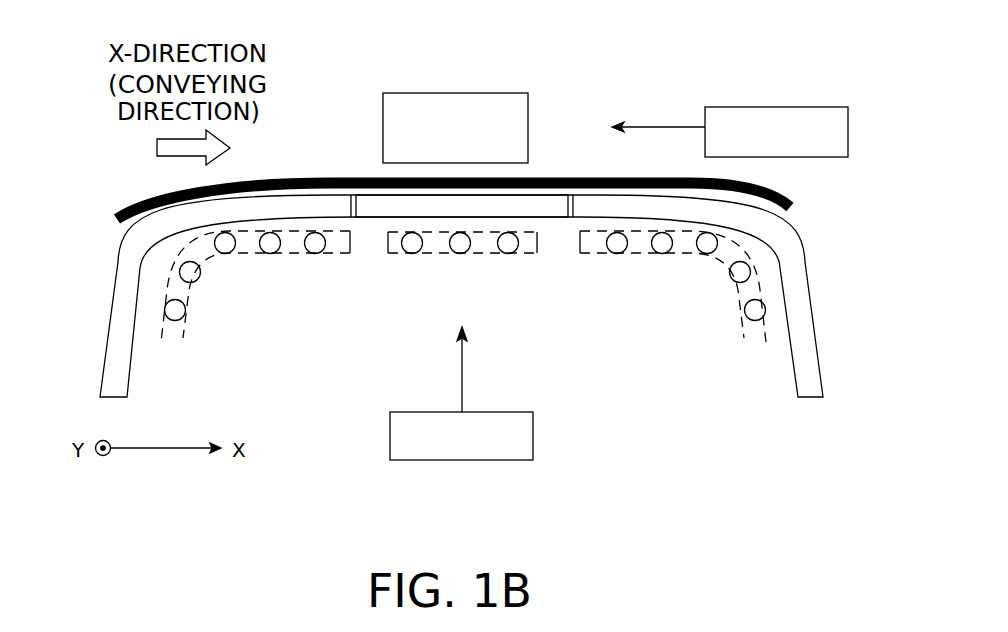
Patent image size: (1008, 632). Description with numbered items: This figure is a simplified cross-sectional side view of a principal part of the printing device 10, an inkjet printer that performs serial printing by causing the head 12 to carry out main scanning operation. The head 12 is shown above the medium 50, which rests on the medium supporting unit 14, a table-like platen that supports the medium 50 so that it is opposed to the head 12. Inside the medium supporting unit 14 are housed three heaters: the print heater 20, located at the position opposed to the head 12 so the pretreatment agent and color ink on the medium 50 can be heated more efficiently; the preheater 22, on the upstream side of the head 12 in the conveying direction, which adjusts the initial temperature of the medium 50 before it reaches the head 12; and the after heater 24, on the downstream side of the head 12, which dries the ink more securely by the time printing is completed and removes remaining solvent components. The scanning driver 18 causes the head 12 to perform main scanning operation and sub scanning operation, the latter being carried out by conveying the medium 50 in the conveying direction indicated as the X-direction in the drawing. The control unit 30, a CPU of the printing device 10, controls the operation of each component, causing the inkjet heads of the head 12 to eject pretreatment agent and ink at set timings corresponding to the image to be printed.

The printing device 10 is at (92, 160).
The head 12 is at (528, 108).
The medium supporting unit 14 is at (553, 212).
The scanning driver 18 is at (766, 107).
The print heater 20 is at (410, 250).
The preheater 22 is at (180, 335).
The after heater 24 is at (753, 348).
The control unit 30 is at (390, 444).
The medium 50 is at (278, 177).